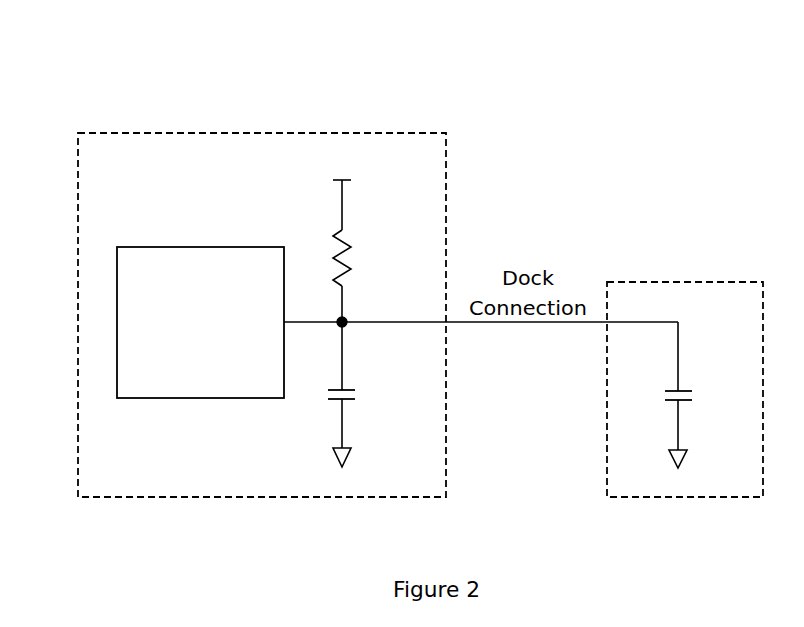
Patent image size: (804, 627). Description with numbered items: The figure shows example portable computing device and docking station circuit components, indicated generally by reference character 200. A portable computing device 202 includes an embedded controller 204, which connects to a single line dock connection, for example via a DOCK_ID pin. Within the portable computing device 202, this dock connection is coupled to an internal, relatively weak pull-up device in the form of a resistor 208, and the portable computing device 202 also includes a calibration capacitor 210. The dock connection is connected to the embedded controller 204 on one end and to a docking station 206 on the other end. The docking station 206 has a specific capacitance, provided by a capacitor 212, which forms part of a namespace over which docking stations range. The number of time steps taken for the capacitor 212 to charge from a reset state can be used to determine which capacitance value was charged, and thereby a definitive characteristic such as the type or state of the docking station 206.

The portable computing device and docking station circuit components 200 is at (619, 68).
The portable computing device 202 is at (343, 133).
The embedded controller 204 is at (181, 363).
The docking station 206 is at (619, 282).
The resistor 208 is at (371, 251).
The calibration capacitor 210 is at (371, 394).
The capacitor 212 is at (707, 395).